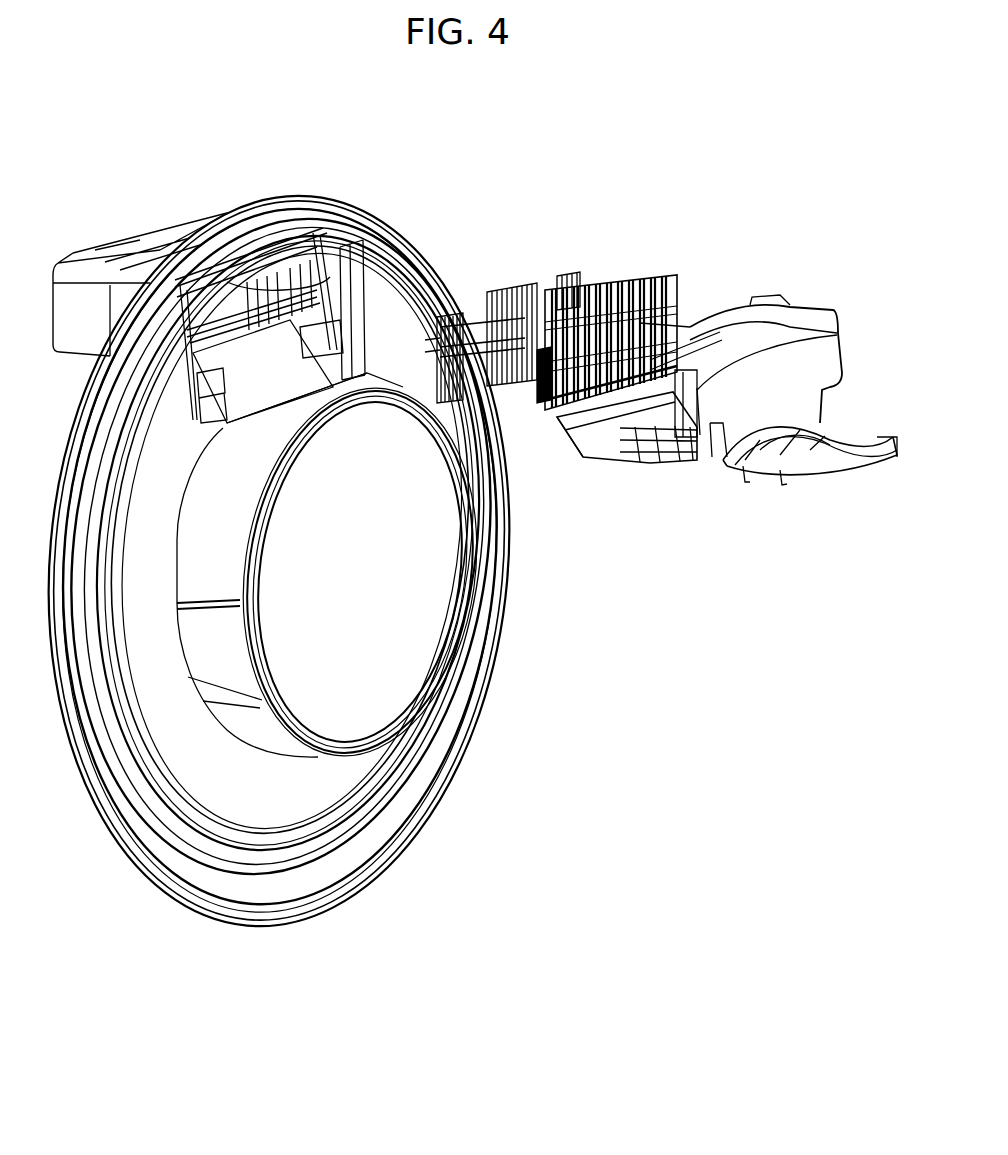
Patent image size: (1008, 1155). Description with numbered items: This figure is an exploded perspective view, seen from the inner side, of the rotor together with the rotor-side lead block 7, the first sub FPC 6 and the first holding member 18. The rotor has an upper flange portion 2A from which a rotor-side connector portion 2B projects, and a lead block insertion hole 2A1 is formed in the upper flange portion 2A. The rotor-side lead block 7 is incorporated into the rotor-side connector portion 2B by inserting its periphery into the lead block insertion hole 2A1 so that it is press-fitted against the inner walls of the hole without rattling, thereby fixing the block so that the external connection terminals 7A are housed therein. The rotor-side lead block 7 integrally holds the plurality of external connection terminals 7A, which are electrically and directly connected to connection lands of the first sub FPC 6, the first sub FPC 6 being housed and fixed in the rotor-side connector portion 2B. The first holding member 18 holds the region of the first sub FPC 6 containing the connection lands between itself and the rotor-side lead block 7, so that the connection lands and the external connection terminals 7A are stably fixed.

The upper flange portion 2A is at (58, 707).
The rotor-side connector portion 2B is at (80, 270).
The lead block insertion hole 2A1 is at (350, 267).
The external connection terminal 7A is at (508, 307).
The rotor-side lead block 7 is at (585, 290).
The first sub FPC 6 is at (634, 488).
The first holding member 18 is at (763, 500).